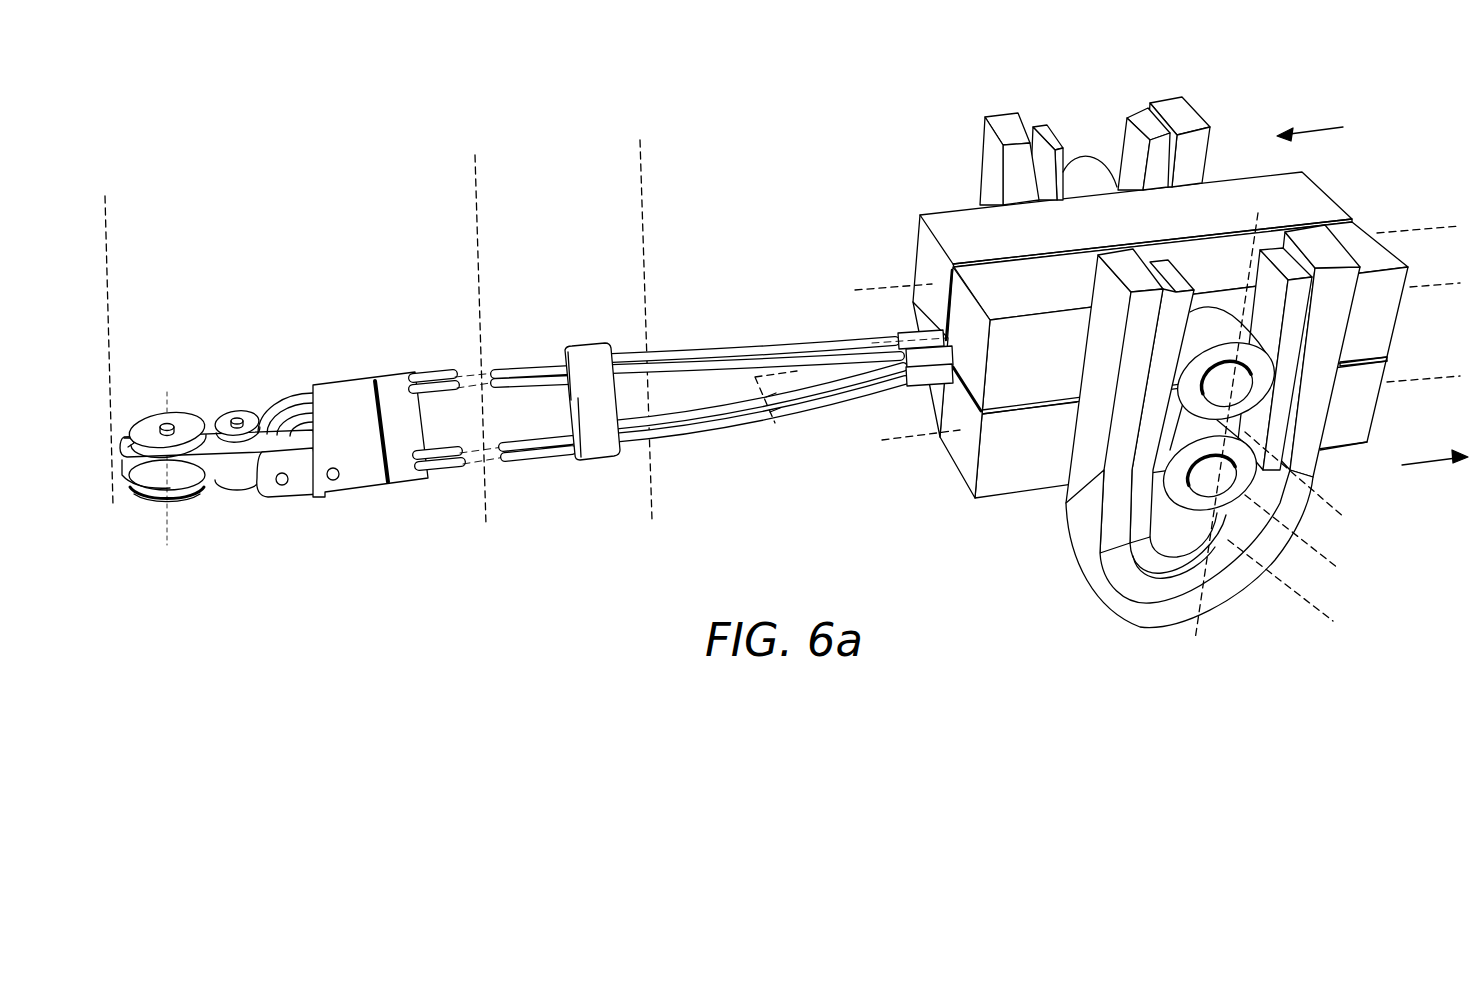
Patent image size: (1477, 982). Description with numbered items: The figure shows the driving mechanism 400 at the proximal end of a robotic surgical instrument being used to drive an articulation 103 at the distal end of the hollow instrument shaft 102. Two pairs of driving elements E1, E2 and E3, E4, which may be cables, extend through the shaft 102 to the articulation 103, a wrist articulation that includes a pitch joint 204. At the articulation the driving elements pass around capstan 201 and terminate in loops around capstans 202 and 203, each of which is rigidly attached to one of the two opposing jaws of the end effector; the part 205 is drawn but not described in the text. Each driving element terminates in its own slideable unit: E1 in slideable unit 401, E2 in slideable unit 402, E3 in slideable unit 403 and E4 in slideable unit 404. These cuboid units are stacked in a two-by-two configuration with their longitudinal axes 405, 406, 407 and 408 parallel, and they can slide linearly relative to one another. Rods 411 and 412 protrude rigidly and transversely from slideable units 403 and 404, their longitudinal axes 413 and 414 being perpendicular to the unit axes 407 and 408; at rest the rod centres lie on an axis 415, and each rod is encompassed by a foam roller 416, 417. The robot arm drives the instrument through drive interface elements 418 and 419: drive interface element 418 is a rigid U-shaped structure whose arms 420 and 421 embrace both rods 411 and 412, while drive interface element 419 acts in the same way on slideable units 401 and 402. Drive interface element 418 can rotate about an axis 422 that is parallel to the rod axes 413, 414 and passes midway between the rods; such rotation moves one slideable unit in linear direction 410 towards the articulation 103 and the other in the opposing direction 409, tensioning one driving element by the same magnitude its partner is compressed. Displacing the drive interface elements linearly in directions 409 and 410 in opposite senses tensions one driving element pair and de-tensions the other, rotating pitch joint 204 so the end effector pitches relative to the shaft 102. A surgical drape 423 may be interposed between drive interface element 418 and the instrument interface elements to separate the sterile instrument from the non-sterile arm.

The articulation 103 is at (105, 192).
The shaft 102 is at (640, 135).
The driving mechanism 400 is at (638, 135).
The capstan 201 is at (237, 418).
The capstan 202 is at (166, 424).
The capstan 203 is at (155, 494).
The pitch joint 204 is at (283, 486).
The arm 205 is at (242, 466).
The driving element E1 is at (437, 377).
The driving element E2 is at (455, 390).
The driving element E3 is at (443, 453).
The driving element E4 is at (455, 470).
The slideable unit 401 is at (918, 222).
The slideable unit 402 is at (915, 400).
The slideable unit 403 is at (1393, 342).
The slideable unit 404 is at (1368, 425).
The longitudinal axis 405 is at (858, 290).
The longitudinal axis 406 is at (783, 410).
The longitudinal axis 407 is at (957, 337).
The longitudinal axis 408 is at (882, 442).
The linear direction 409 is at (1437, 468).
The linear direction 410 is at (1305, 125).
The rod 411 is at (1247, 385).
The rod 412 is at (1067, 503).
The longitudinal axis of rod 413 is at (1335, 508).
The longitudinal axis of rod 414 is at (1320, 612).
The axis 415 is at (1207, 612).
The foam roller 416 is at (1226, 365).
The foam roller 417 is at (1175, 488).
The drive interface element 418 is at (1103, 597).
The drive interface element 419 is at (985, 135).
The arm 420 is at (1345, 320).
The arm 421 is at (1128, 365).
The axis 422 is at (1328, 562).
The surgical drape 423 is at (1160, 578).